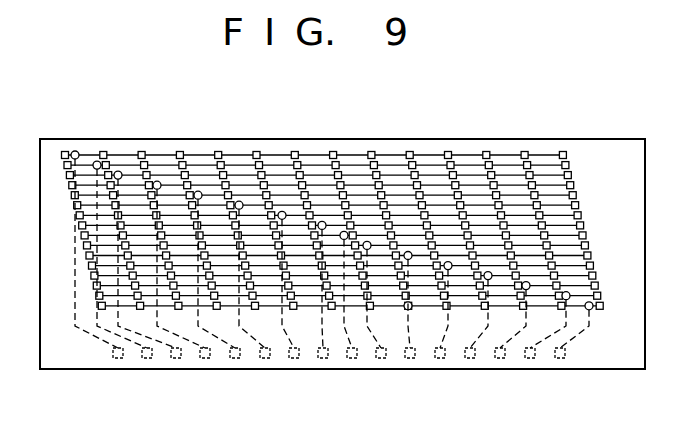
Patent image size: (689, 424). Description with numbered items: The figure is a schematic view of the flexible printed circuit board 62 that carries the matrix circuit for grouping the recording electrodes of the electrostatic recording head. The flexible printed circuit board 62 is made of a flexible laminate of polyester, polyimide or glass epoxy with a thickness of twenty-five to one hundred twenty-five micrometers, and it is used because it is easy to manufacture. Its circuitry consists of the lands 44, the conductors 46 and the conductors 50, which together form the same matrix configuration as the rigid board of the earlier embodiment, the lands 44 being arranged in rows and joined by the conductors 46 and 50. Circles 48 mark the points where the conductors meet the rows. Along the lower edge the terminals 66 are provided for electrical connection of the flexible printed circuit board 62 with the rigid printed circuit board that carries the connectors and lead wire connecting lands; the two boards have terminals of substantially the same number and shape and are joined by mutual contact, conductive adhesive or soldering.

The lands 44 is at (103, 152).
The conductors 46 is at (197, 152).
The connection nodes 48 is at (75, 150).
The conductors 50 is at (75, 292).
The flexible printed circuit board 62 is at (396, 139).
The terminals 66 is at (118, 358).